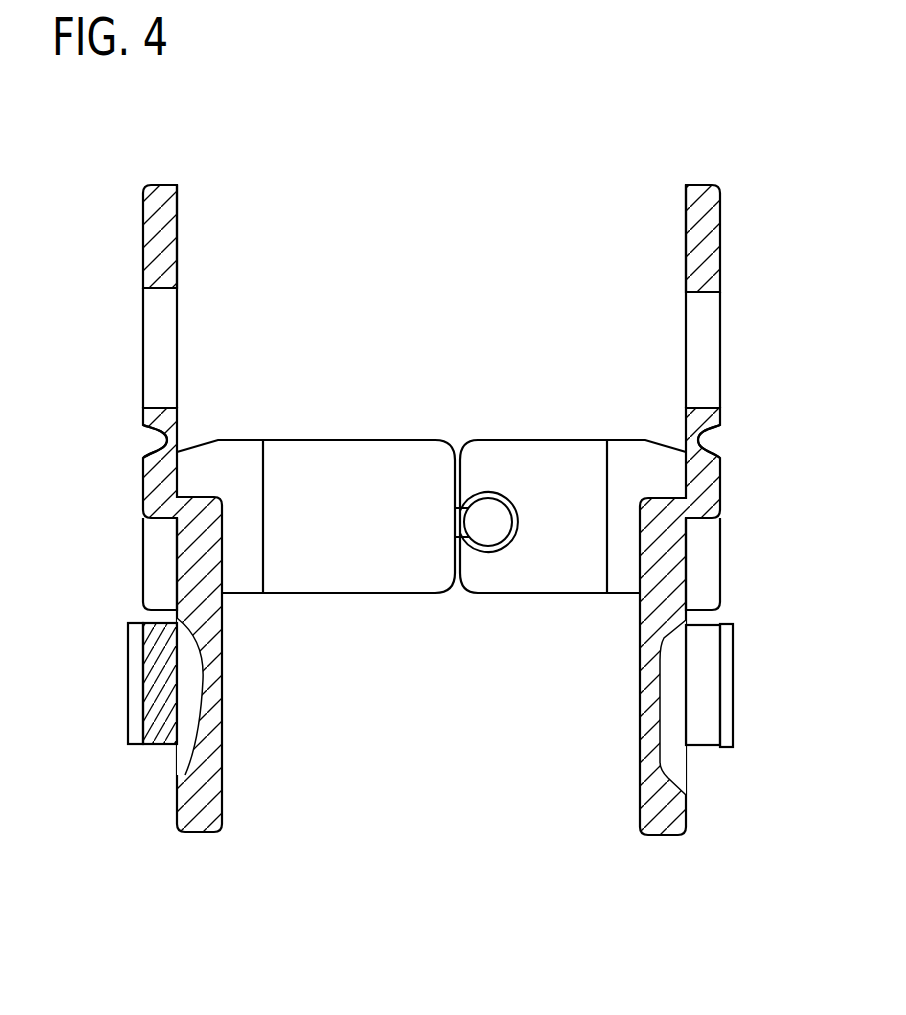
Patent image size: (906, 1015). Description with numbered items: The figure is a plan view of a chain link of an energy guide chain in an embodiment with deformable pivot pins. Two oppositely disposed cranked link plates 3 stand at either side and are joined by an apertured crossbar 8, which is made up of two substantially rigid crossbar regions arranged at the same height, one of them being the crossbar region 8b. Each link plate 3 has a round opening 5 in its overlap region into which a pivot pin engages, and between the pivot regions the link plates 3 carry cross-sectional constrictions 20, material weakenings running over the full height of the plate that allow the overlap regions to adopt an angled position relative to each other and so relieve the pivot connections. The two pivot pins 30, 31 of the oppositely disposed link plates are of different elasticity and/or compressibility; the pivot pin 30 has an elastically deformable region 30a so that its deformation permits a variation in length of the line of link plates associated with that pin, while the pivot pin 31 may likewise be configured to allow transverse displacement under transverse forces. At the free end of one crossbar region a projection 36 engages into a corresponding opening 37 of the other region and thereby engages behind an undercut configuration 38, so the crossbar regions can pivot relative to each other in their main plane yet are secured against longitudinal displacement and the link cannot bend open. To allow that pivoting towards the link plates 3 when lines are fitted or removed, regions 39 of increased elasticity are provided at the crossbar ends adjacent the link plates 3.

The link plate 3 is at (152, 223).
The round opening 5 is at (152, 322).
The crossbar 8 is at (538, 476).
The crossbar region 8b is at (498, 470).
The cross-sectional constriction 20 is at (158, 441).
The pivot pin 30 is at (152, 707).
The elastically deformable region 30a is at (155, 670).
The pivot pin 31 is at (708, 710).
The projection 36 is at (490, 538).
The opening 37 is at (509, 549).
The undercut configuration 38 is at (461, 553).
The region of increased elasticity 39 is at (230, 460).